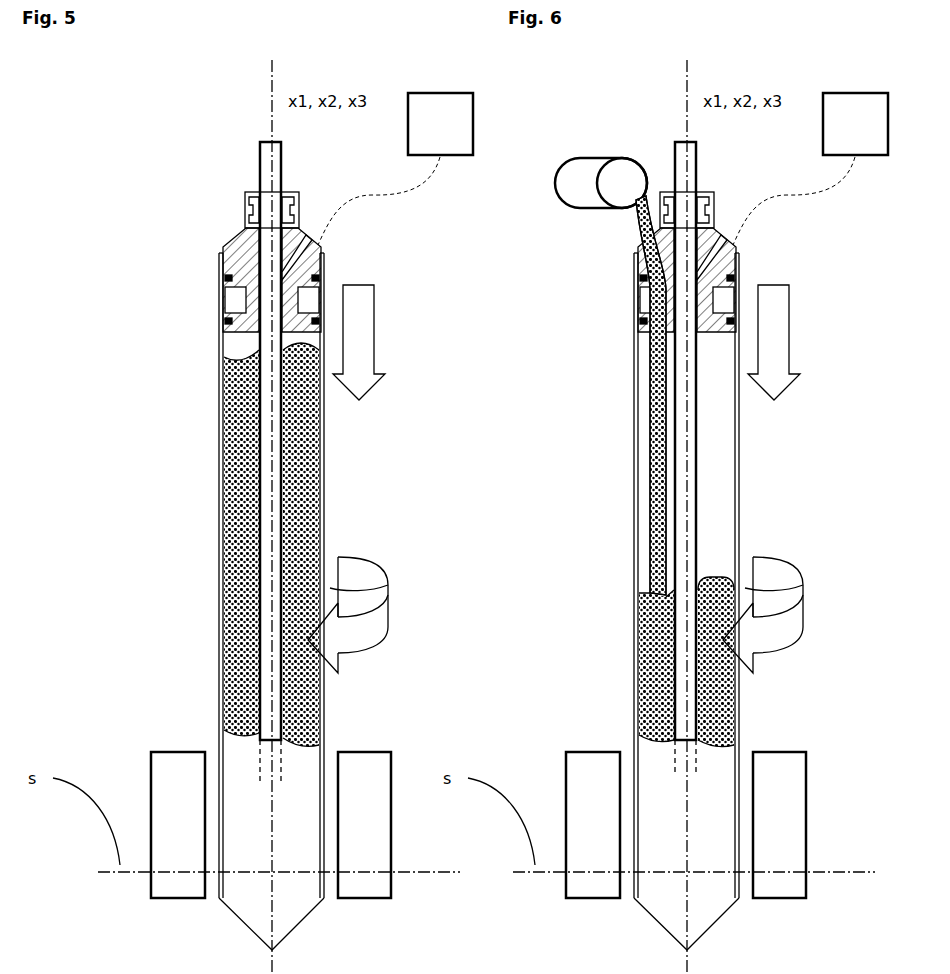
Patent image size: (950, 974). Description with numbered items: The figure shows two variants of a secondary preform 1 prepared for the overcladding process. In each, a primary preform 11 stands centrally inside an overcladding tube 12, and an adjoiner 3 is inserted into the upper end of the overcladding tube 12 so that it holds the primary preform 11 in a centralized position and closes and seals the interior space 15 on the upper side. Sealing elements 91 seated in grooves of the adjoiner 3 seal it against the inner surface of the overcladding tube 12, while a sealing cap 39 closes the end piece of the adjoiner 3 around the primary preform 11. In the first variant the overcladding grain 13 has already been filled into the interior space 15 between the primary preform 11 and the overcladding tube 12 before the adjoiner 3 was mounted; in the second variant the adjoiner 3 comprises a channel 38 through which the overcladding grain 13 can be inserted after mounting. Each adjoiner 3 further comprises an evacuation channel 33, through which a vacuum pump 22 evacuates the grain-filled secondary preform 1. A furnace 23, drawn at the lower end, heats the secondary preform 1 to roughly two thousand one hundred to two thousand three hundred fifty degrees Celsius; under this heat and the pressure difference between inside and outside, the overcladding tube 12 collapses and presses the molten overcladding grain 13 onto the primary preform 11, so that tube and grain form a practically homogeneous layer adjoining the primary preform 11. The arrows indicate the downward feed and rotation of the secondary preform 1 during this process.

In FIG. 5, the secondary preform 1 is at (137, 579).
In FIG. 6, the secondary preform 1 is at (633, 546).
In FIG. 5, the adjoiner 3 is at (269, 236).
In FIG. 6, the adjoiner 3 is at (731, 273).
In FIG. 5, the primary preform 11 is at (272, 480).
In FIG. 6, the primary preform 11 is at (629, 458).
In FIG. 5, the overcladding tube 12 is at (220, 450).
In FIG. 6, the overcladding tube 12 is at (650, 601).
In FIG. 5, the overcladding grain 13 is at (253, 580).
In FIG. 6, the overcladding grain 13 is at (618, 616).
In FIG. 5, the interior space 15 is at (301, 544).
In FIG. 6, the interior space 15 is at (741, 583).
In FIG. 5, the vacuum pump 22 is at (395, 169).
In FIG. 6, the vacuum pump 22 is at (810, 169).
In FIG. 5, the furnace 23 is at (271, 825).
In FIG. 6, the furnace 23 is at (686, 825).
In FIG. 5, the evacuation channel 33 is at (317, 249).
In FIG. 6, the channel 38 is at (614, 395).
In FIG. 5, the sealing cap 39 is at (302, 208).
In FIG. 6, the sealing cap 39 is at (712, 190).
In FIG. 5, the sealing elements 91 is at (215, 307).